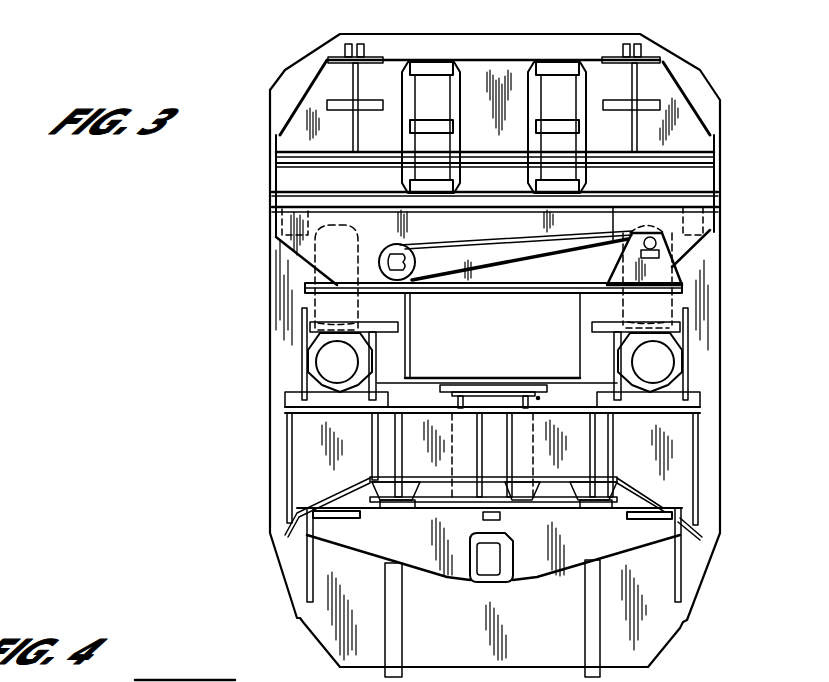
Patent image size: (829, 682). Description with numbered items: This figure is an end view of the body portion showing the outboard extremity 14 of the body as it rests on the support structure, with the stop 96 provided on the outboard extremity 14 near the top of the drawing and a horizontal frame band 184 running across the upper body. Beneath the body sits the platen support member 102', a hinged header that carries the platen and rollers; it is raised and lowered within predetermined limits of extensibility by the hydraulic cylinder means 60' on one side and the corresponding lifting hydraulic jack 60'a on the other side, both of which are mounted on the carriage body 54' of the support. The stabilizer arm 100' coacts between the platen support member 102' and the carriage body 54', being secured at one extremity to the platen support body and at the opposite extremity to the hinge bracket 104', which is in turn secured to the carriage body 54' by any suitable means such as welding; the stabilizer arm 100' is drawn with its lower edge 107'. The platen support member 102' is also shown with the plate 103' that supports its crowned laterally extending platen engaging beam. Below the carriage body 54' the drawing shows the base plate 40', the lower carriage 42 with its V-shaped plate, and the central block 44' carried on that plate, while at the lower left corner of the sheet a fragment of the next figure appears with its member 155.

In FIG. 3, the outboard extremity 14 is at (493, 74).
In FIG. 3, the stop 96 is at (578, 100).
In FIG. 3, the frame bands 184 is at (287, 175).
In FIG. 3, the platen support member 102' is at (287, 277).
In FIG. 3, the hydraulic cylinder means 60' is at (280, 264).
In FIG. 3, the stabilizer arm 100' is at (505, 245).
In FIG. 3, the cable 107' is at (520, 261).
In FIG. 3, the hinge bracket 104' is at (694, 256).
In FIG. 3, the lifting hydraulic jack 60'a is at (706, 279).
In FIG. 3, the carriage body 54' is at (492, 335).
In FIG. 3, the plate 103' is at (493, 320).
In FIG. 3, the base plate 40' is at (532, 417).
In FIG. 3, the carriage 42 is at (570, 510).
In FIG. 3, the block 44' is at (510, 573).
In FIG. 4, the member 155 is at (205, 680).